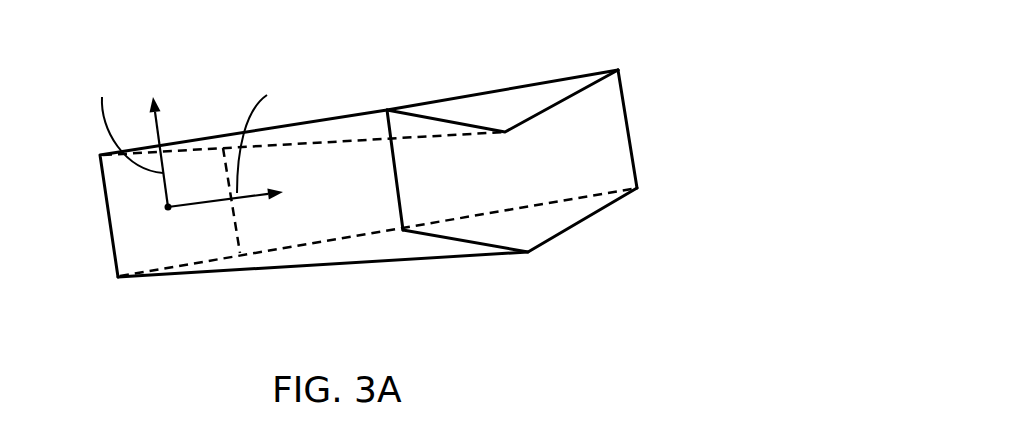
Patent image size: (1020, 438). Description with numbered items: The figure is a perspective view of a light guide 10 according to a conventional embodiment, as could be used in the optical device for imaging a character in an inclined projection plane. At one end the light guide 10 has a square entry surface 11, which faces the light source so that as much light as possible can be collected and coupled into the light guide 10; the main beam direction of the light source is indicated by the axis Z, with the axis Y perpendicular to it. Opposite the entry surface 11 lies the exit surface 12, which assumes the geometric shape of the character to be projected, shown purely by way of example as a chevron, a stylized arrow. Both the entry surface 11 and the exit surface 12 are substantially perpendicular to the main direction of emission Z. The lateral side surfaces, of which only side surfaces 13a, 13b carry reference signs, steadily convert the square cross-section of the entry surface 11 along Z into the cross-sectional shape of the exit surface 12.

The light guide 10 is at (357, 112).
The entry surface 11 is at (150, 207).
The exit surface 12 is at (602, 139).
The side surface 13a is at (310, 223).
The side surface 13b is at (672, 151).